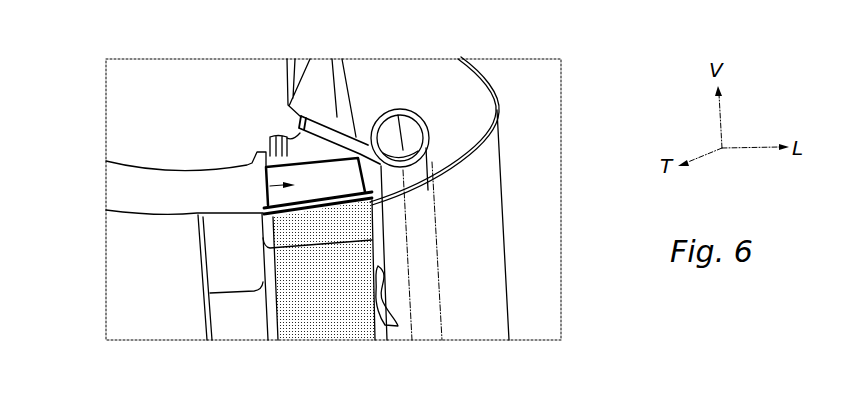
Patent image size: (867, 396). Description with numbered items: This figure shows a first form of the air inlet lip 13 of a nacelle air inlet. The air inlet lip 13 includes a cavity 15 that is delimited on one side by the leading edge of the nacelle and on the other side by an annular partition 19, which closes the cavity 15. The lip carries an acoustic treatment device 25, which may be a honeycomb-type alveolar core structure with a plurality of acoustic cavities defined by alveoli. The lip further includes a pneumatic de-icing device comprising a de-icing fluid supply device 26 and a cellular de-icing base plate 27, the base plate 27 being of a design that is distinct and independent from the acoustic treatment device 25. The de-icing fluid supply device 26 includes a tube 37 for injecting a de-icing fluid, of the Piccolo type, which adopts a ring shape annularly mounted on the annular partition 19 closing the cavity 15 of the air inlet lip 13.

The air inlet lip 13 is at (498, 70).
The cavity 15 is at (465, 125).
The annular partition 19 is at (268, 158).
The acoustic treatment device 25 is at (270, 186).
The de-icing fluid supply device 26 is at (388, 104).
The cellular de-icing base plate 27 is at (314, 218).
The tube for injecting a de-icing fluid 37 is at (418, 173).